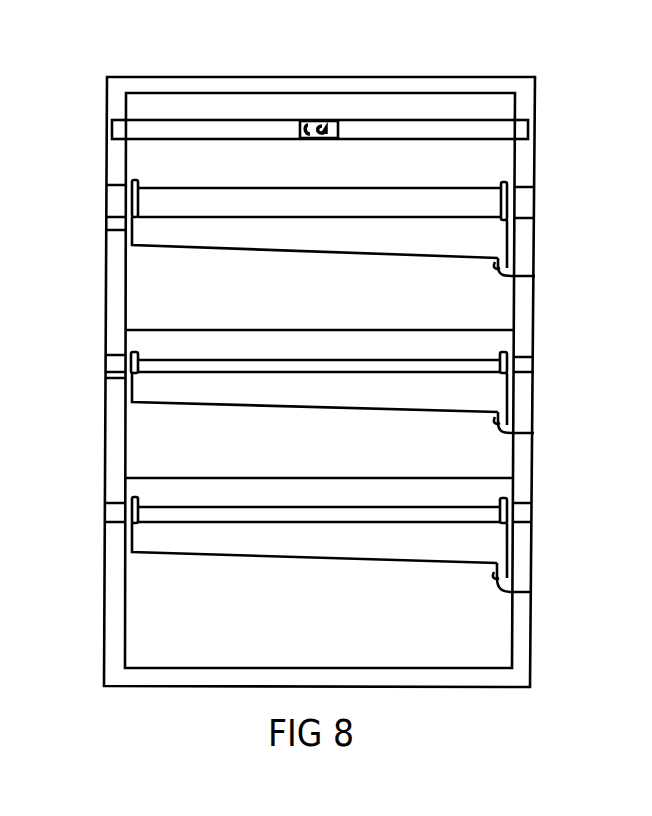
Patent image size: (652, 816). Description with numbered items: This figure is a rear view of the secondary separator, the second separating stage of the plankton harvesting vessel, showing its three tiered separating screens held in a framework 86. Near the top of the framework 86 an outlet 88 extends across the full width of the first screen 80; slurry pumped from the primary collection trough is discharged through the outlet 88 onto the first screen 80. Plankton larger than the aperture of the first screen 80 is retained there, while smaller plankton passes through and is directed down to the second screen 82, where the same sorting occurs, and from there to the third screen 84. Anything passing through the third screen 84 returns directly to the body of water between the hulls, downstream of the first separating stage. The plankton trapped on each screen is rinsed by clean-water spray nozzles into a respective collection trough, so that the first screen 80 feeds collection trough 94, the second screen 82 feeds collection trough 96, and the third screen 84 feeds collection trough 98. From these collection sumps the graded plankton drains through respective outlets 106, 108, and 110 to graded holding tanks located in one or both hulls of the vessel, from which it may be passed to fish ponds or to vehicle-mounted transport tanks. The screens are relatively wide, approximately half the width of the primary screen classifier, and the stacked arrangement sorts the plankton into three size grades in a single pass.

The first screen 80 is at (458, 202).
The second screen 82 is at (472, 340).
The third screen 84 is at (472, 490).
The framework 86 is at (116, 625).
The outlet 88 is at (477, 128).
The collection trough 94 is at (488, 237).
The collection trough 96 is at (475, 392).
The collection trough 98 is at (483, 540).
The outlet 106 is at (533, 273).
The outlet 108 is at (533, 433).
The outlet 110 is at (533, 592).